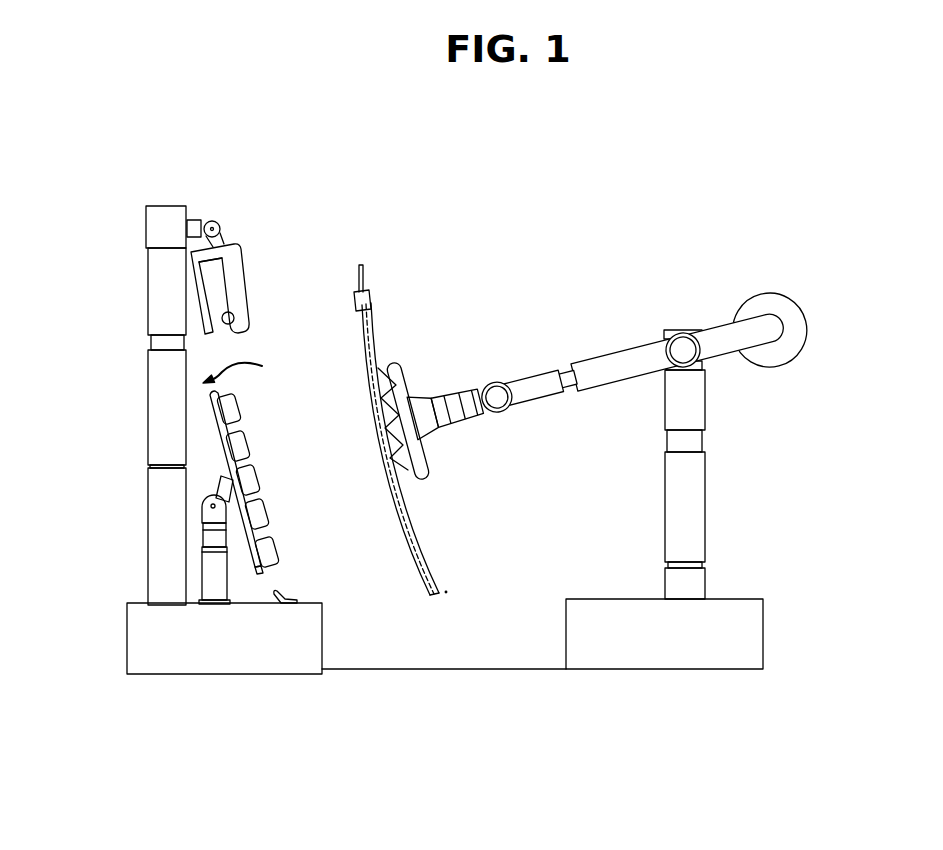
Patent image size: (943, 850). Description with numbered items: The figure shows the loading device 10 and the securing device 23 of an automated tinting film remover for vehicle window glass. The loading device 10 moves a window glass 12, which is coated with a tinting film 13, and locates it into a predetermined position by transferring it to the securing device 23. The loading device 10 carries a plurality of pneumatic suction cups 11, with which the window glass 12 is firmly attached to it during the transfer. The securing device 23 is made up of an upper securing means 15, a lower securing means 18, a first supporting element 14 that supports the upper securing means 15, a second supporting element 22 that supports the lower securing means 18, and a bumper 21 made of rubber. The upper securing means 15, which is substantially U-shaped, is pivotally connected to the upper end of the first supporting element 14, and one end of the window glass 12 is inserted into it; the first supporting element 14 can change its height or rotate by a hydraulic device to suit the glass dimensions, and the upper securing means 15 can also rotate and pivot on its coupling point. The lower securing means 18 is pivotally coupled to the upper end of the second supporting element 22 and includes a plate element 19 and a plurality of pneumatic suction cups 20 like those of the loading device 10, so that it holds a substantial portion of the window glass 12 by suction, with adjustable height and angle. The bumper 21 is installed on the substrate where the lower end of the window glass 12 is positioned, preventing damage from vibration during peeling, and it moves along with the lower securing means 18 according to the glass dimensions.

The loading device 10 is at (630, 316).
The pneumatic suction cups 11 is at (400, 395).
The window glass 12 is at (426, 590).
The tinting film 13 is at (425, 553).
The first supporting element 14 is at (162, 290).
The upper securing means 15 is at (248, 278).
The lower securing means 18 is at (200, 427).
The plate element 19 is at (253, 576).
The pneumatic suction cups 20 is at (268, 510).
The bumper 21 is at (285, 598).
The second supporting element 22 is at (208, 573).
The securing device 23 is at (247, 369).